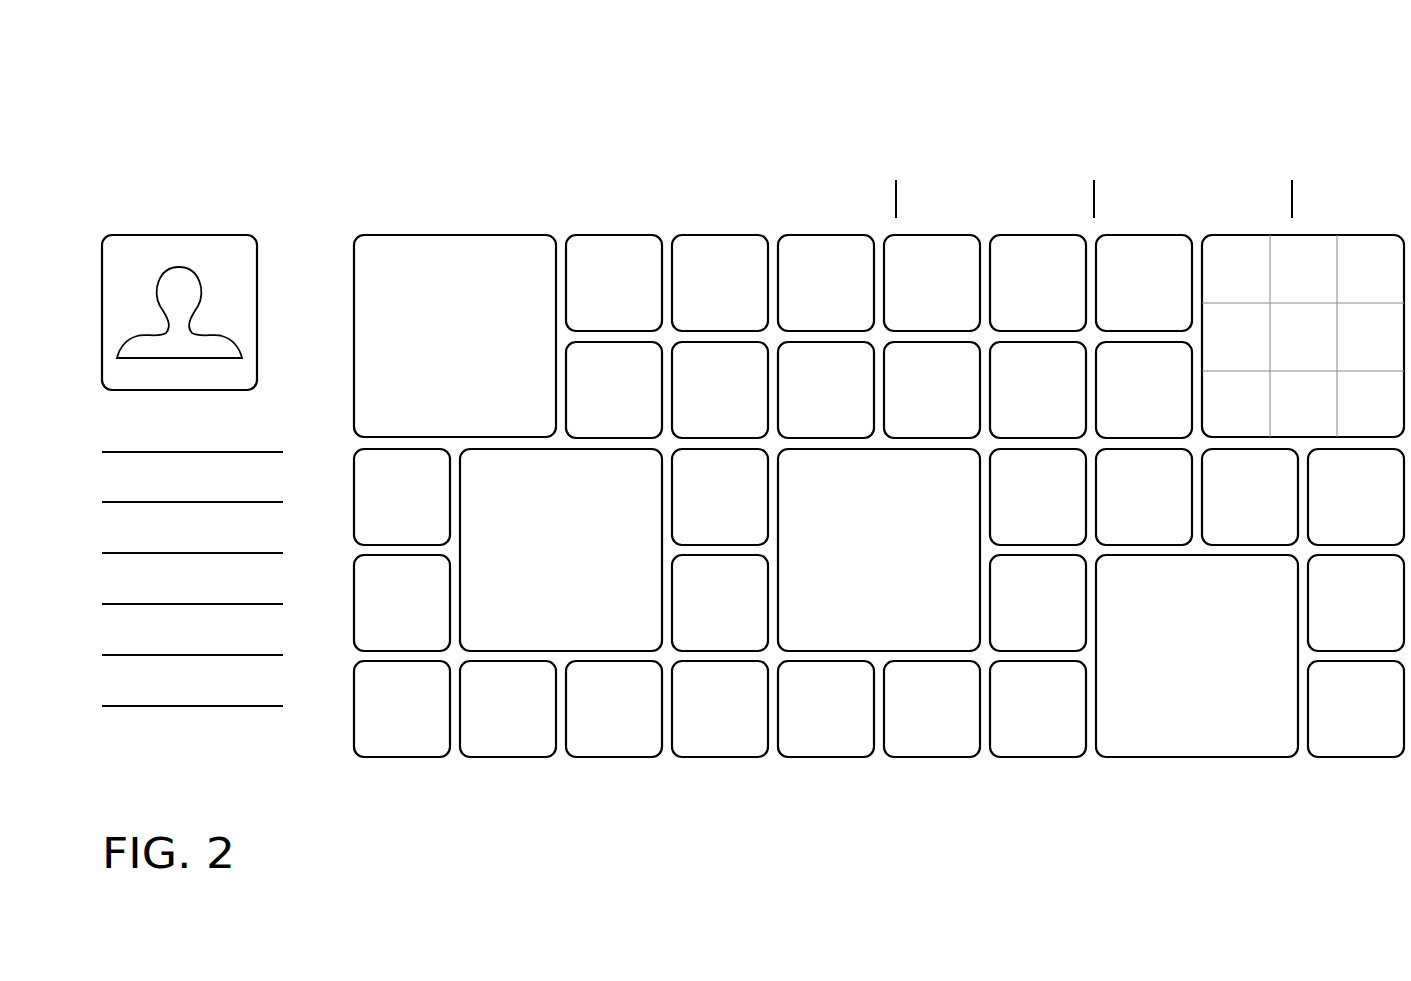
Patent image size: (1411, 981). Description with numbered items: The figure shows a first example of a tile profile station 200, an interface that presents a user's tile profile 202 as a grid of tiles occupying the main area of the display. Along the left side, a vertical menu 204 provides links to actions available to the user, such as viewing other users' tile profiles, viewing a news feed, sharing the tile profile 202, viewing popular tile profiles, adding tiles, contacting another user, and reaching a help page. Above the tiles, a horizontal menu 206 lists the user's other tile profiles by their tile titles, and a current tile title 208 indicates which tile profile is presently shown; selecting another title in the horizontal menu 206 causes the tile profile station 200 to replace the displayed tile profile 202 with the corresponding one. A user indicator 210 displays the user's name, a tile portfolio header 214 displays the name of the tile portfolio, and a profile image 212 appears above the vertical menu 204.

The tile profile station 200 is at (325, 58).
The tile profile 202 is at (351, 227).
The vertical menu 204 is at (256, 758).
The horizontal menu 206 is at (1035, 133).
The current tile title 208 is at (614, 160).
The user indicator 210 is at (516, 114).
The profile image 212 is at (167, 233).
The tile portfolio header 214 is at (183, 79).